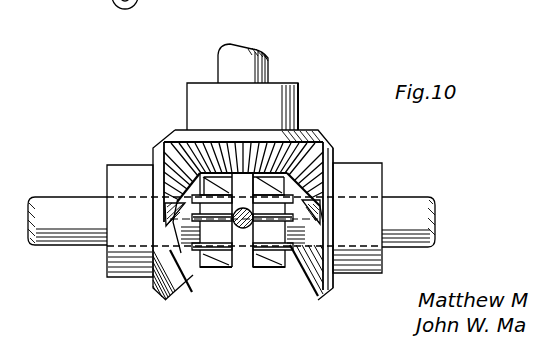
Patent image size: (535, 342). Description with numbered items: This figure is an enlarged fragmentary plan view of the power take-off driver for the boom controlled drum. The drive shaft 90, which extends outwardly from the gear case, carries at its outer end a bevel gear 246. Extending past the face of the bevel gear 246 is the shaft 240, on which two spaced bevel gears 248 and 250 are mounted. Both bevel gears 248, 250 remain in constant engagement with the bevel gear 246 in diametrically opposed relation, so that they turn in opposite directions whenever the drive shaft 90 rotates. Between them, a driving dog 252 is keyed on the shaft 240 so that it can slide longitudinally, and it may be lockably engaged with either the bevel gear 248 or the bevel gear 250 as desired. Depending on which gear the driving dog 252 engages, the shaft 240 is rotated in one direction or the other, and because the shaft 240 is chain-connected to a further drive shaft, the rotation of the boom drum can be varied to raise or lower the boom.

The drive shaft 90 is at (270, 50).
The bevel gear 246 is at (308, 128).
The shaft 240 is at (82, 229).
The bevel gear 248 is at (184, 282).
The driving dog 252 is at (239, 258).
The bevel gear 250 is at (311, 288).